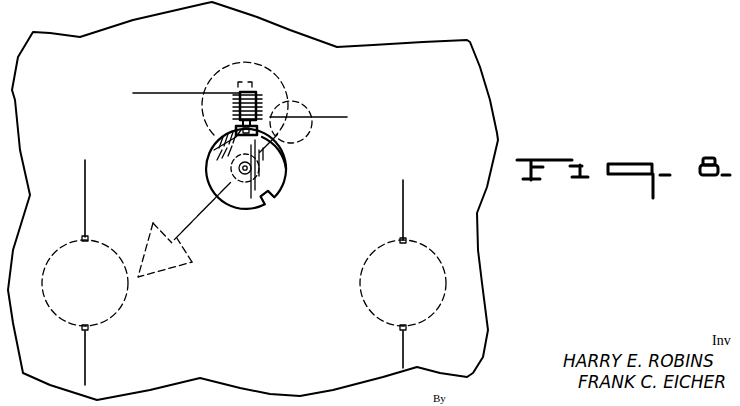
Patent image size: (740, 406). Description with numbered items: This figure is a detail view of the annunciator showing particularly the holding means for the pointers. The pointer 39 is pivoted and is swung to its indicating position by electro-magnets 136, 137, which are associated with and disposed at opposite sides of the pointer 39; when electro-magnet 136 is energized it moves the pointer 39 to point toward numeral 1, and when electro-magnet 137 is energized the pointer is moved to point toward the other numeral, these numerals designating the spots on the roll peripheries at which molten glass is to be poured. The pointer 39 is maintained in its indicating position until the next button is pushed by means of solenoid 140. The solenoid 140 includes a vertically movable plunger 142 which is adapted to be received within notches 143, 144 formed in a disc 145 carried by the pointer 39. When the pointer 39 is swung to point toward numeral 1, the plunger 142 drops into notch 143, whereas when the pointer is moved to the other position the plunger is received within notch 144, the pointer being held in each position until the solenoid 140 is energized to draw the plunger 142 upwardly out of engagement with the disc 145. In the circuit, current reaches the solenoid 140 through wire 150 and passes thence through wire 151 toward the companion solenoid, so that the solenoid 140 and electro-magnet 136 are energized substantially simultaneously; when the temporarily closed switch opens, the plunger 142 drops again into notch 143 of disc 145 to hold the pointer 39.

The numeral 1 is at (460, 73).
The pointer 39 is at (205, 223).
The electro-magnet 136 is at (72, 252).
The electro-magnet 137 is at (375, 282).
The solenoid 140 is at (234, 90).
The plunger 142 is at (232, 158).
The notch 143 is at (218, 140).
The notch 144 is at (264, 203).
The disc 145 is at (278, 172).
The wire 150 is at (167, 68).
The wire 151 is at (318, 115).